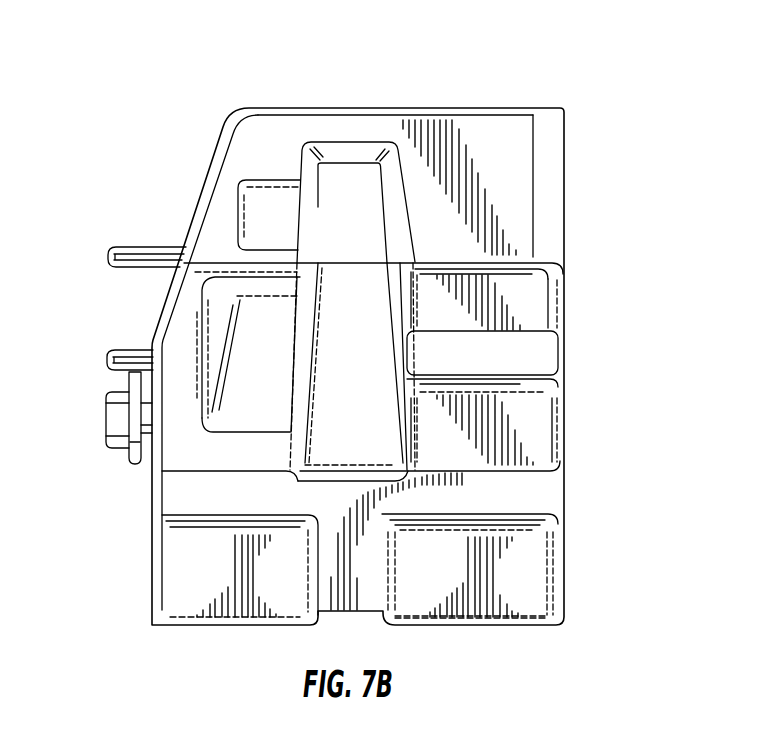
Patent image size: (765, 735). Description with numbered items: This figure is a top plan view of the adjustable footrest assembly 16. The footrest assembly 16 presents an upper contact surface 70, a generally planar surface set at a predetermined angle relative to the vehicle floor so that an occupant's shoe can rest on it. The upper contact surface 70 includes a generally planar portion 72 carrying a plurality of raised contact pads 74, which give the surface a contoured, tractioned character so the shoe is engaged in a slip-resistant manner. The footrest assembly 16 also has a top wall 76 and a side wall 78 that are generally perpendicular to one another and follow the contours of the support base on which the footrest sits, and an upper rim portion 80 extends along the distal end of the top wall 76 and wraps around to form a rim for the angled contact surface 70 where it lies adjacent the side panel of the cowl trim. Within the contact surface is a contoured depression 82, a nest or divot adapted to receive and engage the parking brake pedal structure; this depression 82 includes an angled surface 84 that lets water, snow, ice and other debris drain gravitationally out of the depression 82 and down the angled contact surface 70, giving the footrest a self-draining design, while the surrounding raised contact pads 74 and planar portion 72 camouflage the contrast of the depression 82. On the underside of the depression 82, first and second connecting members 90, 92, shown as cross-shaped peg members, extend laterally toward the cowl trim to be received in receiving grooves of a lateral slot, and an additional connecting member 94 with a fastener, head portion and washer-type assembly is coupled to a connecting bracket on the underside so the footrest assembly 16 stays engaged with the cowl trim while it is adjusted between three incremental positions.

The footrest assembly 16 is at (524, 92).
The upper contact surface 70 is at (250, 604).
The planar portion 72 is at (283, 505).
The raised contact pads 74 is at (532, 305).
The top wall 76 is at (505, 192).
The side wall 78 is at (565, 248).
The upper rim portion 80 is at (387, 108).
The contoured depression 82 is at (317, 242).
The angled surface 84 is at (362, 406).
The first connecting member 90 is at (135, 248).
The second connecting member 92 is at (121, 349).
The connecting member 94 is at (106, 451).